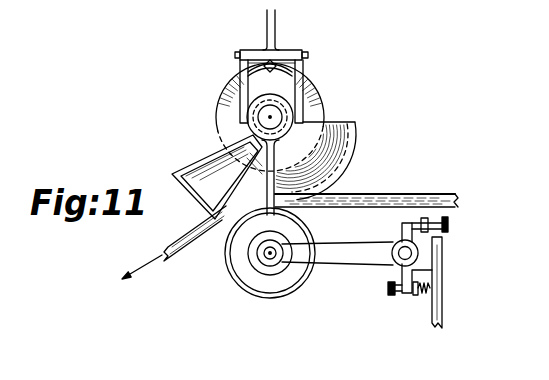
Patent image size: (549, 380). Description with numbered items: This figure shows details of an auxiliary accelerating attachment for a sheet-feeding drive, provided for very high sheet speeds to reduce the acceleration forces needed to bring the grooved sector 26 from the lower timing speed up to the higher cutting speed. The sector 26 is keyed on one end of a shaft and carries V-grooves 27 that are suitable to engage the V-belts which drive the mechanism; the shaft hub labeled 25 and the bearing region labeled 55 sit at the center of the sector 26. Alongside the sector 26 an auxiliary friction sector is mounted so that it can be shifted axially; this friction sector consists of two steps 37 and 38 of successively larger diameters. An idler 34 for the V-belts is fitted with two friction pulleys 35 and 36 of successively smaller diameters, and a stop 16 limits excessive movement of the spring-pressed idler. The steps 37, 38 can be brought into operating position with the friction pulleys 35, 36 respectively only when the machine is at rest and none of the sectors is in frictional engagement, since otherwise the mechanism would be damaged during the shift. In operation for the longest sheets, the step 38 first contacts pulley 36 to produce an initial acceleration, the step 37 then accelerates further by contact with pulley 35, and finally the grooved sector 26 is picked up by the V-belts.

The stop 16 is at (420, 293).
The shaft 25 is at (268, 115).
The sector 26 is at (355, 128).
The V-grooves 27 is at (362, 122).
The idler 34 is at (300, 284).
The friction pulley 35 is at (253, 273).
The friction pulley 36 is at (275, 268).
The step of friction sector 37 is at (255, 185).
The step of friction sector 38 is at (190, 165).
The bearing 55 is at (288, 107).